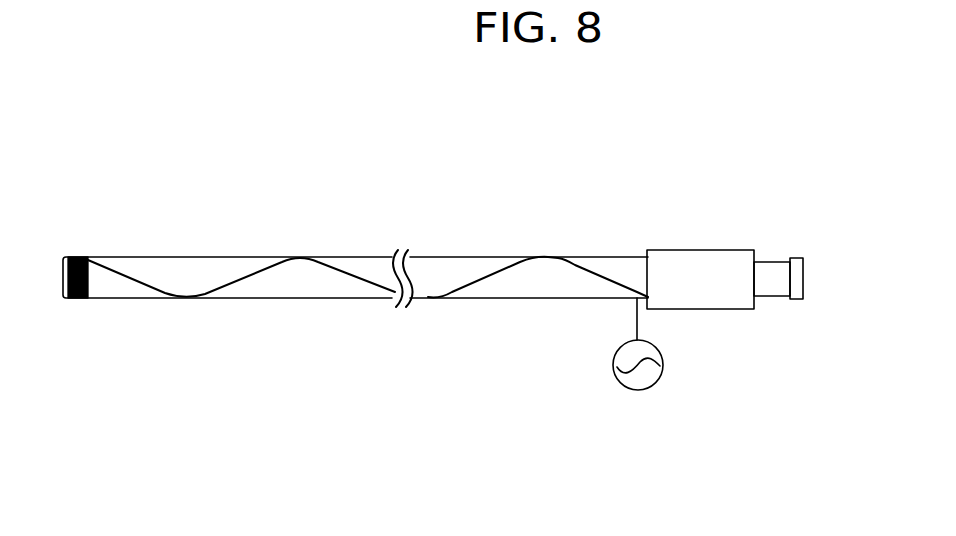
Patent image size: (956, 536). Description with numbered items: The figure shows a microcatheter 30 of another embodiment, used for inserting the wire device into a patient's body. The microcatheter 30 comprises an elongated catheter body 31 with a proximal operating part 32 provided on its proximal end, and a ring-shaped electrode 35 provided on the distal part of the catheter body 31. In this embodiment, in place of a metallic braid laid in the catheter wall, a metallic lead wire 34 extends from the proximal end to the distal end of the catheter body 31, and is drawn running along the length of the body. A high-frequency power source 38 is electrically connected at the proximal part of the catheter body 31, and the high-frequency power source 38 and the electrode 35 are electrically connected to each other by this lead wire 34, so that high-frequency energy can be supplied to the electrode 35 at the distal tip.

The microcatheter 30 is at (465, 249).
The catheter body 31 is at (305, 300).
The proximal operating part 32 is at (780, 298).
The metallic lead wire 34 is at (243, 283).
The electrode 35 is at (80, 300).
The high-frequency power source 38 is at (620, 385).